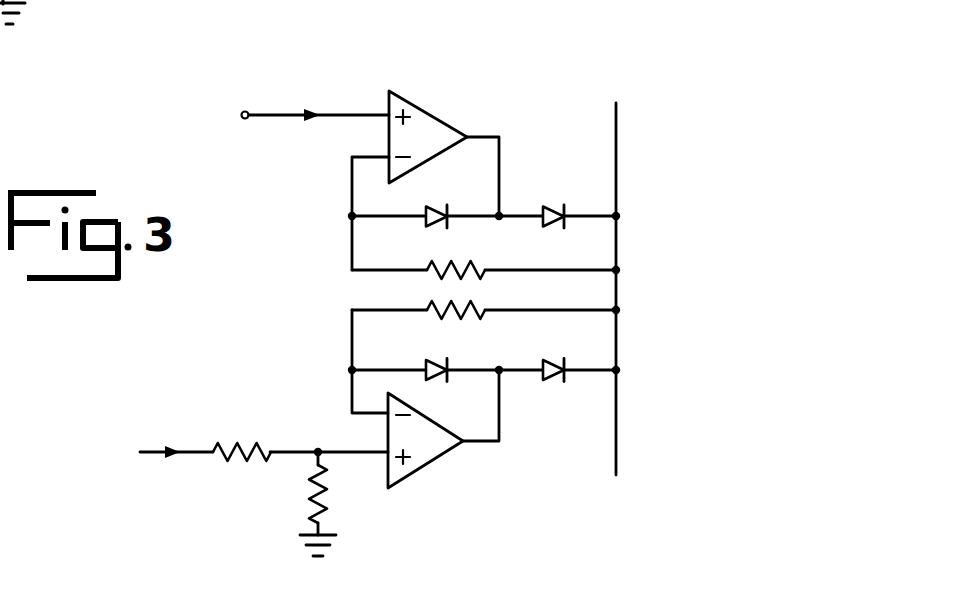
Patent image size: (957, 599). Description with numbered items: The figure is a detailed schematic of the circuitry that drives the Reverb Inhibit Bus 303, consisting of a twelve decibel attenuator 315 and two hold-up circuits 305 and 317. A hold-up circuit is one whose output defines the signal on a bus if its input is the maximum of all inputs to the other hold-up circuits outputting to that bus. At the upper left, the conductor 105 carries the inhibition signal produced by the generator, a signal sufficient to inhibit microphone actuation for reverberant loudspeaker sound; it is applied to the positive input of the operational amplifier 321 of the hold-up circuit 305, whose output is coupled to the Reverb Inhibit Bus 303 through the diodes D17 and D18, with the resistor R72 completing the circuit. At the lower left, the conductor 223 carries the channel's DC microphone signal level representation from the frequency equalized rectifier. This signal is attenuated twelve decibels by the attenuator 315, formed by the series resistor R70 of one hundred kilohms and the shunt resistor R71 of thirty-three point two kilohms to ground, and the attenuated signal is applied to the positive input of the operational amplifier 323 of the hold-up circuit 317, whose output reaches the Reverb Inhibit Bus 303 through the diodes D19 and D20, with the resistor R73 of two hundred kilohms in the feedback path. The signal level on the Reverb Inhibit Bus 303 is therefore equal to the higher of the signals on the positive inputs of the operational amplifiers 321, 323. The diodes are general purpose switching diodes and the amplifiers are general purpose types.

The conductor 105 is at (288, 118).
The Reverb Inhibit Bus 303 is at (617, 333).
The hold-up circuit 305 is at (440, 86).
The hold-up circuit 317 is at (437, 472).
The operational amplifier 321 is at (434, 128).
The operational amplifier 323 is at (442, 444).
The conductor 223 is at (154, 456).
The attenuator 315 is at (262, 498).
The diode D17 is at (447, 203).
The diode D18 is at (562, 203).
The diode D19 is at (444, 386).
The diode D20 is at (554, 389).
The resistor R70 is at (242, 437).
The resistor R71 is at (341, 504).
The resistor R72 is at (484, 259).
The resistor R73 is at (484, 326).